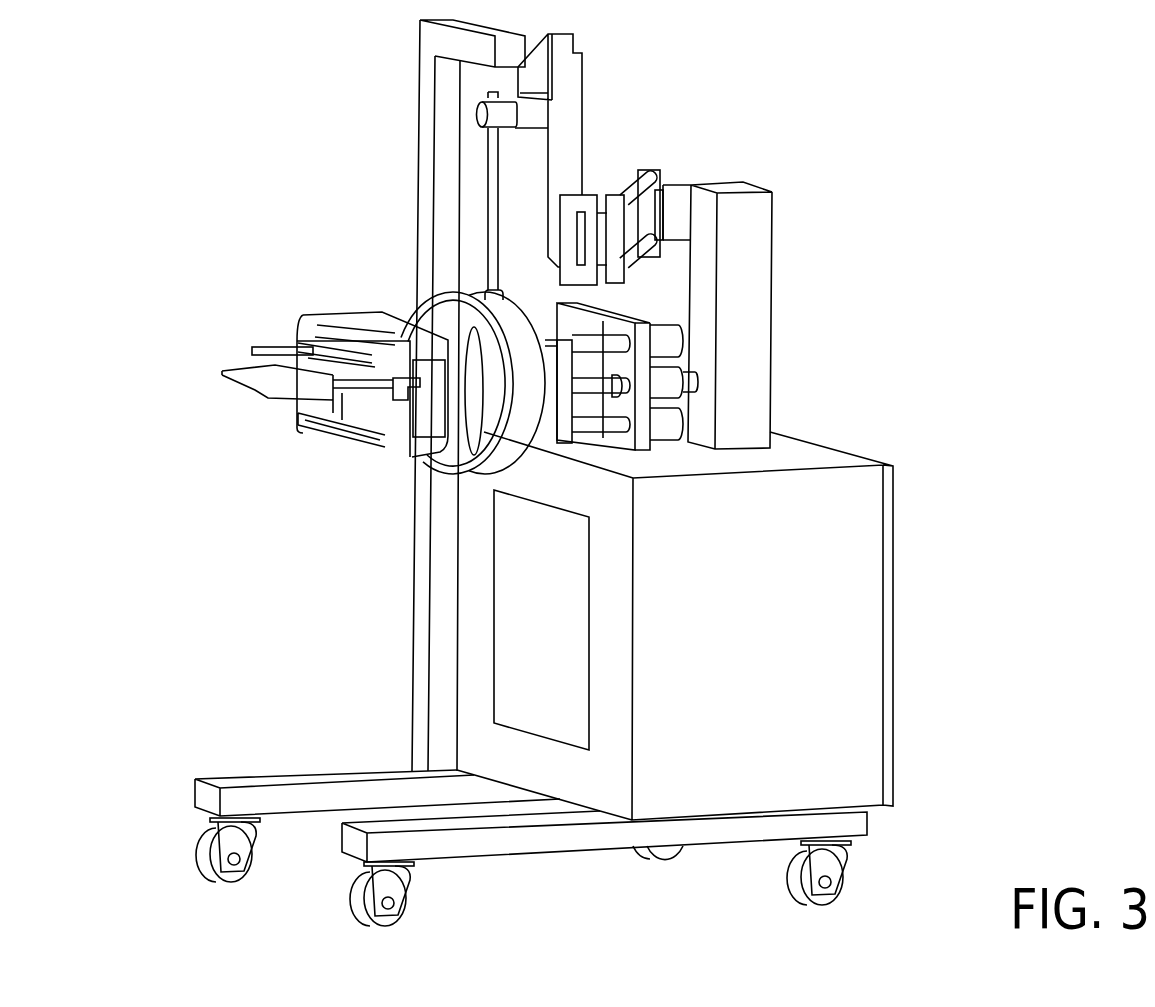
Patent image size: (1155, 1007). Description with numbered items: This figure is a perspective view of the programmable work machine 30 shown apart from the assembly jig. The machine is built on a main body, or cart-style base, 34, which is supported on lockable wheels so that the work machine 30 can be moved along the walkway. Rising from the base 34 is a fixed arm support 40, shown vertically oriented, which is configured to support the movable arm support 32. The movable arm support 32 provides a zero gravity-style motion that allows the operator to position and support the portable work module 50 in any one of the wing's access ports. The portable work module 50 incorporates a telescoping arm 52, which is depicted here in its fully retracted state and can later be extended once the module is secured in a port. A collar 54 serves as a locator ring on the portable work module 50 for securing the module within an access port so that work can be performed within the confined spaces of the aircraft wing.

The programmable work machine 30 is at (1032, 235).
The movable arm support 32 is at (611, 166).
The main body (cart-style base) 34 is at (771, 643).
The fixed arm support 40 is at (758, 270).
The portable work module 50 is at (268, 328).
The telescoping arm 52 is at (353, 455).
The collar 54 is at (510, 455).